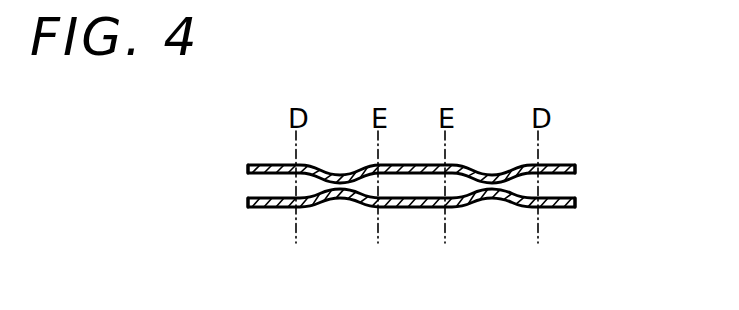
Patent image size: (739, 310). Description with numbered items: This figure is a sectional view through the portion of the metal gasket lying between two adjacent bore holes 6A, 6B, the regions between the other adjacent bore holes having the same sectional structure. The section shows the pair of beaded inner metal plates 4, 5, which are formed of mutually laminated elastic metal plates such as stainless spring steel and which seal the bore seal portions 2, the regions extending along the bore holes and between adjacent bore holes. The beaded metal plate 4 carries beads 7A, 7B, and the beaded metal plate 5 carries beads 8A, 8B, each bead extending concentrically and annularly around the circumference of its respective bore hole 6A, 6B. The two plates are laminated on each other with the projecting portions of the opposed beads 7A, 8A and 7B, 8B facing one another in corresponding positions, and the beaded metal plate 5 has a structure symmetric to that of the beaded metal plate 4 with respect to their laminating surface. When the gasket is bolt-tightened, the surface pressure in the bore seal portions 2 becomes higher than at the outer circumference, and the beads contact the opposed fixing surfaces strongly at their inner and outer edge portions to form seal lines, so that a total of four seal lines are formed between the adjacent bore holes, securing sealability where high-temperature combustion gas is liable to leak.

The bore seal portion 2 is at (405, 153).
The beaded inner metal plate 4 is at (566, 167).
The beaded inner metal plate 5 is at (565, 208).
The bore hole 6A is at (577, 168).
The bore hole 6B is at (247, 202).
The bead 7A is at (492, 169).
The bead 7B is at (340, 169).
The bead 8A is at (492, 198).
The bead 8B is at (337, 198).